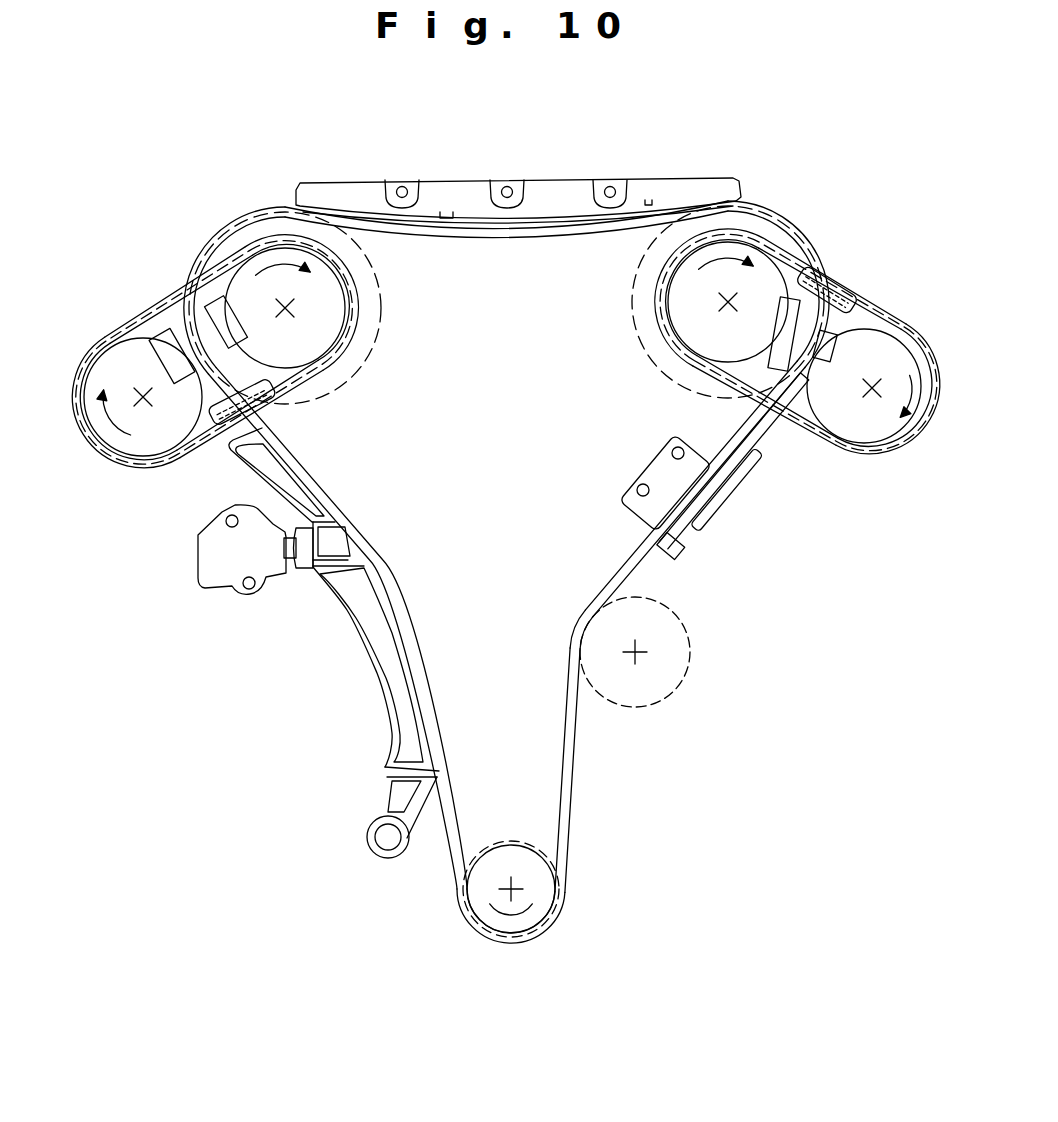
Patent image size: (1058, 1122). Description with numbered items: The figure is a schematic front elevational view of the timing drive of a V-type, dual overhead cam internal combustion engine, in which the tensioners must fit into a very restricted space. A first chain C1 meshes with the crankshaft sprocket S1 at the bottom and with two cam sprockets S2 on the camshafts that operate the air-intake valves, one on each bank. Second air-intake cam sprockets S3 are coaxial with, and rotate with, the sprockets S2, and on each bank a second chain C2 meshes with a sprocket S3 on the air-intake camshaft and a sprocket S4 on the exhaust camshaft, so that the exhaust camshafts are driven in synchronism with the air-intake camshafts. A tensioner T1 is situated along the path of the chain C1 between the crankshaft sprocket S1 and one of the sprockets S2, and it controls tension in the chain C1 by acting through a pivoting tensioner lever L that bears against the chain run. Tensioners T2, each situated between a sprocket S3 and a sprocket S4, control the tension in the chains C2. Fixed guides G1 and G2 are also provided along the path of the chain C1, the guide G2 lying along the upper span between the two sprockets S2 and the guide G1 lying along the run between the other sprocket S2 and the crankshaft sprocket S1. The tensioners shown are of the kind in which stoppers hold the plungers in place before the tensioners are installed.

The fixed guide G2 is at (558, 186).
The fixed guide G1 is at (683, 549).
The first chain C1 is at (570, 803).
The chain C2 is at (300, 381).
The crankshaft sprocket S1 is at (511, 927).
The cam sprocket S2 is at (377, 316).
The second air-intake cam sprocket S3 is at (245, 284).
The sprocket on exhaust camshaft S4 is at (160, 432).
The tensioner T1 is at (203, 578).
The tensioner T2 is at (170, 327).
The tensioner lever L is at (387, 674).